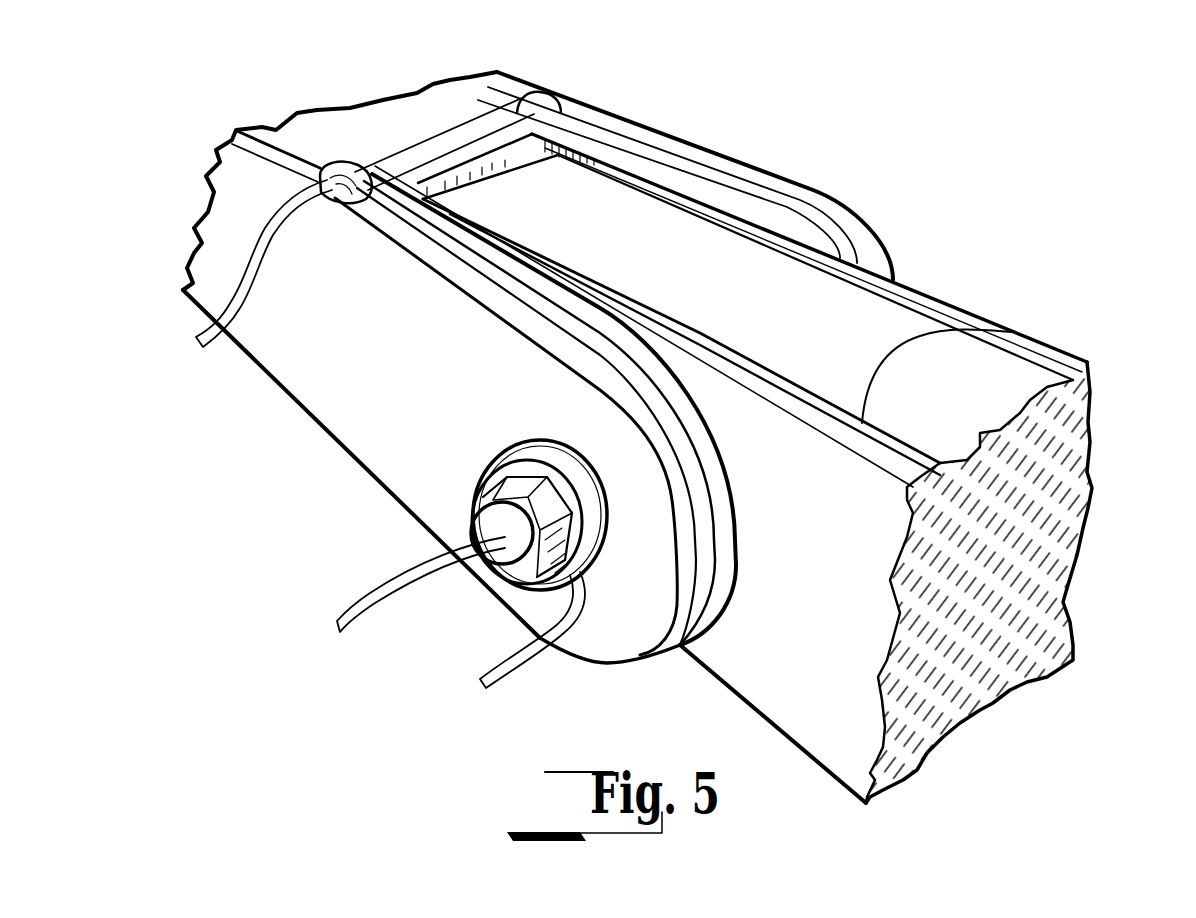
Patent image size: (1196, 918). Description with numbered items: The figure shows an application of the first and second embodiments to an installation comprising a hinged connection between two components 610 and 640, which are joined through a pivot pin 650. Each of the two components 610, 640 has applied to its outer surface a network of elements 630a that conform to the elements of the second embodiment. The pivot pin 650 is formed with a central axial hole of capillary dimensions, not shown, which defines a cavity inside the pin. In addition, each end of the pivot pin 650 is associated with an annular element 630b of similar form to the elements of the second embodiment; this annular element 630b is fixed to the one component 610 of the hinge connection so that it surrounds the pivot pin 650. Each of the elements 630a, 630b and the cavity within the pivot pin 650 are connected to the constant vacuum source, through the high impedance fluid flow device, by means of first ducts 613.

The component 610 is at (198, 200).
The first ducts 613 is at (248, 293).
The network of elements 630a is at (300, 150).
The annular element 630b is at (472, 483).
The component 640 is at (1076, 364).
The pivot pin 650 is at (466, 567).